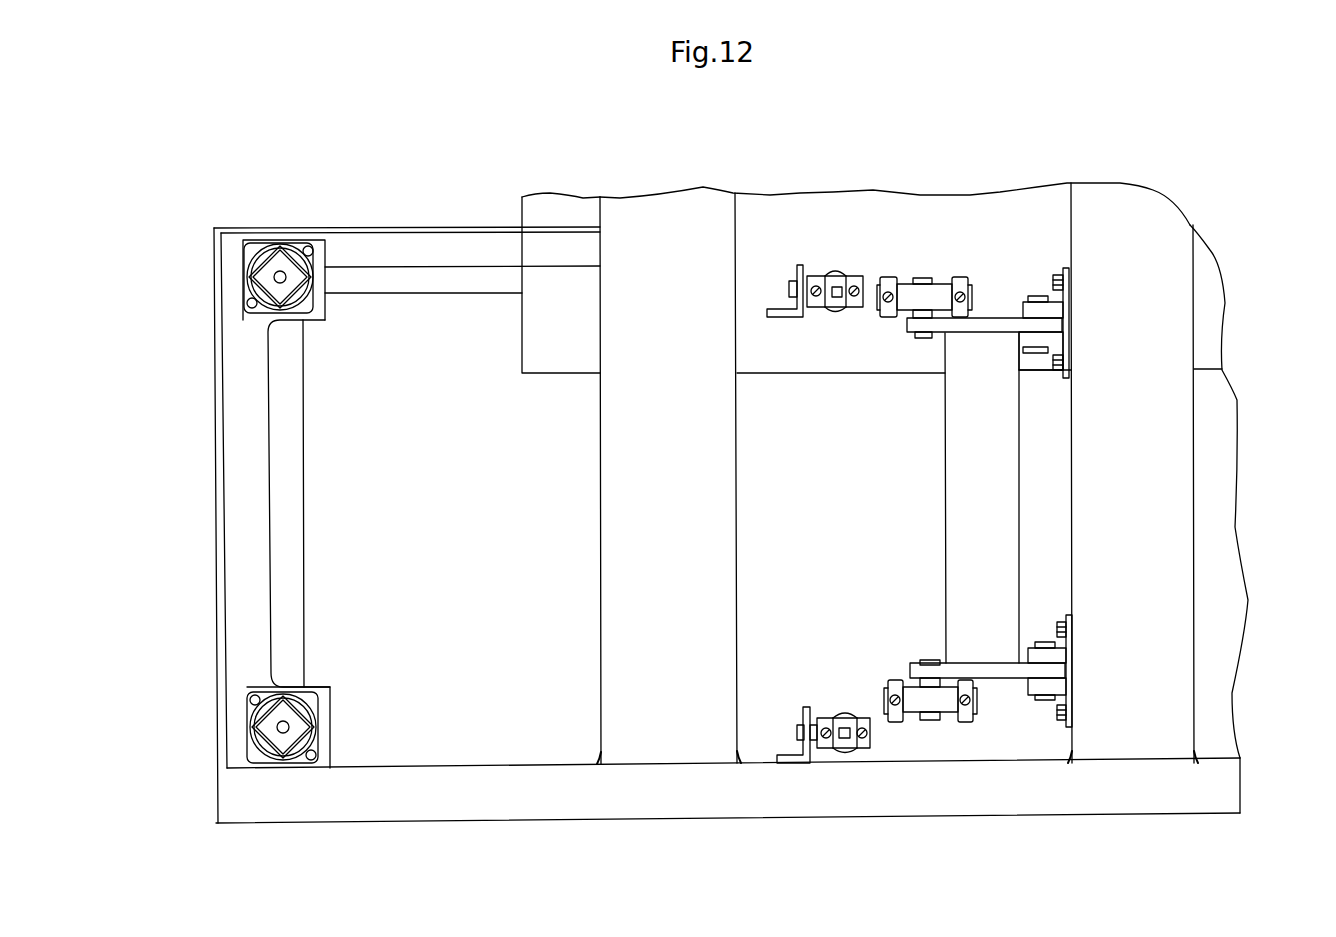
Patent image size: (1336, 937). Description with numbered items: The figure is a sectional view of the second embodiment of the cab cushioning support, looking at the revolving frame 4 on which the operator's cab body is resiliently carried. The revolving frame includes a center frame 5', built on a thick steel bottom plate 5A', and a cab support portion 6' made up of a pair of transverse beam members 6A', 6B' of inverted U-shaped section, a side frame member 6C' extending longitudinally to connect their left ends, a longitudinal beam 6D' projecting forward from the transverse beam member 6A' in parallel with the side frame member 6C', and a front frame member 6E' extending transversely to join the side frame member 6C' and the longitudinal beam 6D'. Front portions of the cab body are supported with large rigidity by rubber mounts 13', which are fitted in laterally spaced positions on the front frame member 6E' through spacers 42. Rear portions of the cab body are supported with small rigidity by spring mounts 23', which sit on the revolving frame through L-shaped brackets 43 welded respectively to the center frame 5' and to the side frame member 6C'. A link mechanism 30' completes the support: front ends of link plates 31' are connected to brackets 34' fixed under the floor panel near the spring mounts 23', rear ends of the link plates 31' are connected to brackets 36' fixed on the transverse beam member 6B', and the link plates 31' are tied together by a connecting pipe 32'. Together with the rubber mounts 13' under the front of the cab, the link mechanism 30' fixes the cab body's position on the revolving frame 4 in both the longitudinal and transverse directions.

The revolving frame 4 is at (649, 826).
The center frame 5' is at (895, 153).
The bottom plate 5A' is at (771, 436).
The cab support portion 6' is at (178, 525).
The transverse beam member 6A' is at (597, 253).
The transverse beam member 6B' is at (1158, 447).
The side frame member 6C' is at (733, 816).
The longitudinal beam 6D' is at (407, 216).
The front frame member 6E' is at (240, 503).
The rubber mount 13' is at (217, 502).
The spring mount 23' is at (837, 486).
The link mechanism 30' is at (1158, 428).
The link plate 31' is at (986, 507).
The connecting pipe 32' is at (1121, 498).
The bracket 34' is at (929, 501).
The bracket 36' is at (1062, 482).
The spacer 42 is at (256, 238).
The L-shaped bracket 43 is at (797, 262).